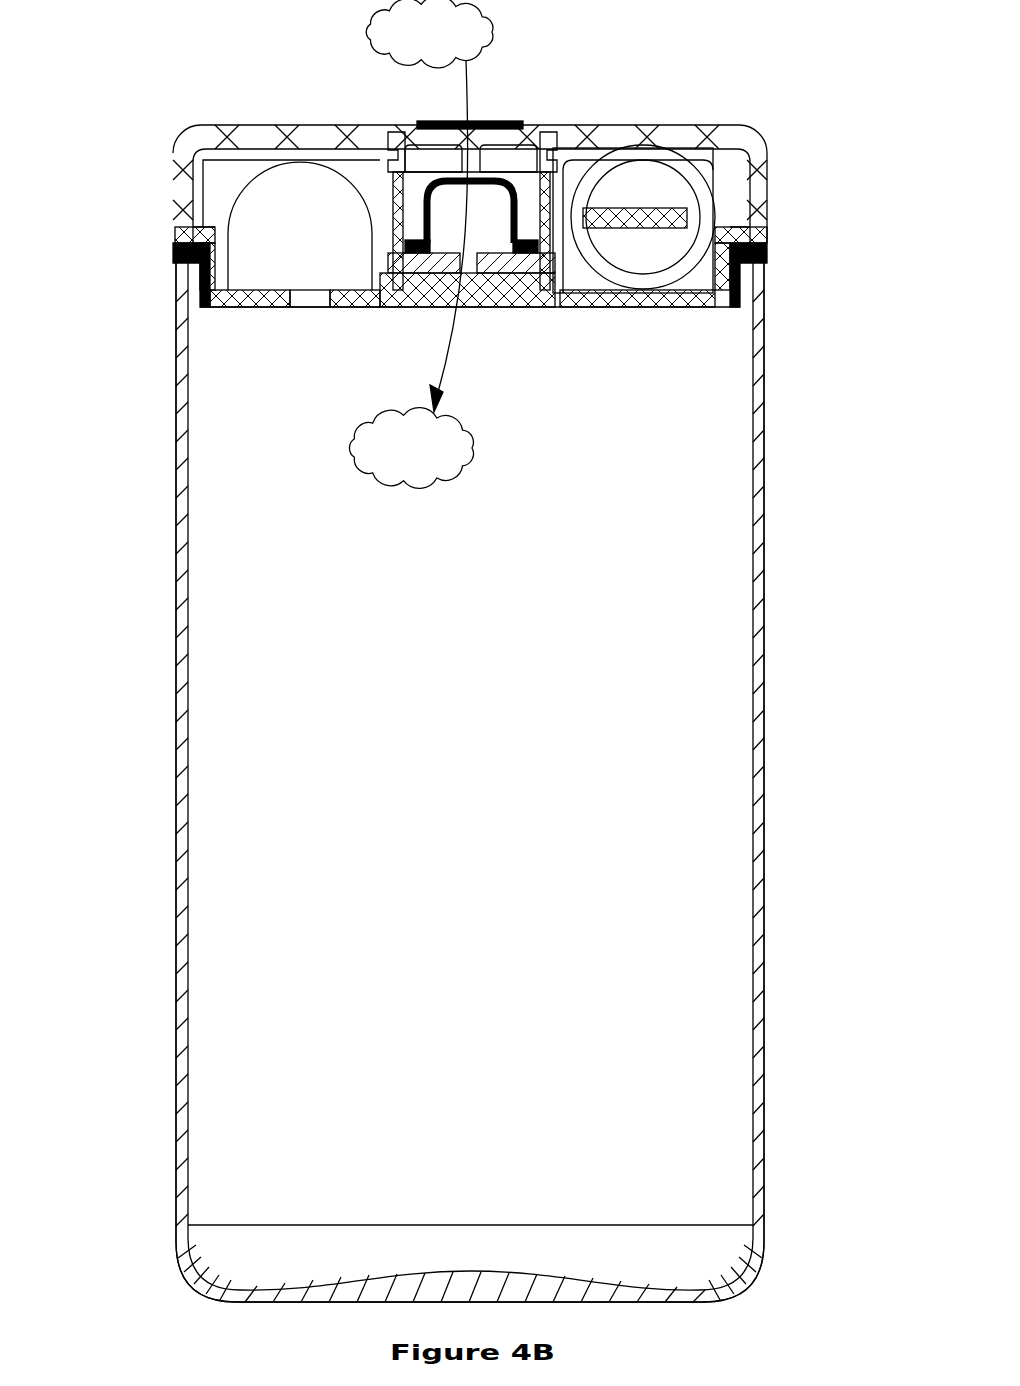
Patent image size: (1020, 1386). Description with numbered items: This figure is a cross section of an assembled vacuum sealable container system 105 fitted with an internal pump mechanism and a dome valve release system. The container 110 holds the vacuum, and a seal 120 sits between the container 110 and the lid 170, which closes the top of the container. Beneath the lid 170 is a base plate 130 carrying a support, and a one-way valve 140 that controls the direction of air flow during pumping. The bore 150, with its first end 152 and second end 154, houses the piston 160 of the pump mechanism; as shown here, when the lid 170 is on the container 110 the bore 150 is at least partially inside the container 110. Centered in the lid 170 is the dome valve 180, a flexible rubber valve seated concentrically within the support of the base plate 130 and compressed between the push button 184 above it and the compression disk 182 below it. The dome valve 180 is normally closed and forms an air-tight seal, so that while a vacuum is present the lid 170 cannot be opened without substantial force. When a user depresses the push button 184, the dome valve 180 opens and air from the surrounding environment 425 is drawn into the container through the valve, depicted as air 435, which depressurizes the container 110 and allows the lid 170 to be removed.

The vacuum sealable container system 105 is at (152, 45).
The container 110 is at (184, 352).
The seal 120 is at (173, 254).
The base plate 130 is at (174, 238).
The one-way valve 140 is at (295, 308).
The bore 150 is at (290, 160).
The first end 152 is at (263, 290).
The second end 154 is at (680, 292).
The piston 160 is at (690, 222).
The lid 170 is at (174, 168).
The dome valve 180 is at (483, 147).
The compression disk 182 is at (507, 290).
The push button 184 is at (450, 160).
The surrounding environment 425 is at (429, 206).
The air 435 is at (411, 448).